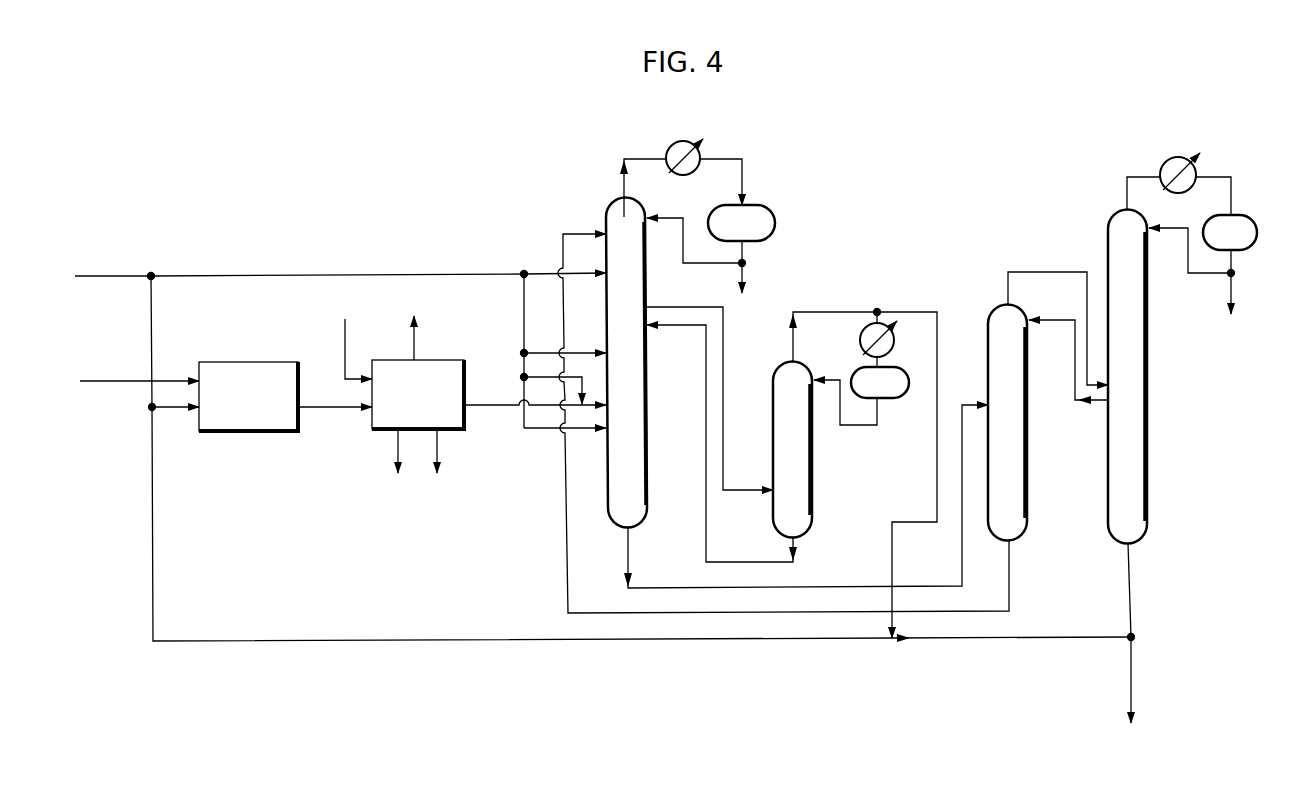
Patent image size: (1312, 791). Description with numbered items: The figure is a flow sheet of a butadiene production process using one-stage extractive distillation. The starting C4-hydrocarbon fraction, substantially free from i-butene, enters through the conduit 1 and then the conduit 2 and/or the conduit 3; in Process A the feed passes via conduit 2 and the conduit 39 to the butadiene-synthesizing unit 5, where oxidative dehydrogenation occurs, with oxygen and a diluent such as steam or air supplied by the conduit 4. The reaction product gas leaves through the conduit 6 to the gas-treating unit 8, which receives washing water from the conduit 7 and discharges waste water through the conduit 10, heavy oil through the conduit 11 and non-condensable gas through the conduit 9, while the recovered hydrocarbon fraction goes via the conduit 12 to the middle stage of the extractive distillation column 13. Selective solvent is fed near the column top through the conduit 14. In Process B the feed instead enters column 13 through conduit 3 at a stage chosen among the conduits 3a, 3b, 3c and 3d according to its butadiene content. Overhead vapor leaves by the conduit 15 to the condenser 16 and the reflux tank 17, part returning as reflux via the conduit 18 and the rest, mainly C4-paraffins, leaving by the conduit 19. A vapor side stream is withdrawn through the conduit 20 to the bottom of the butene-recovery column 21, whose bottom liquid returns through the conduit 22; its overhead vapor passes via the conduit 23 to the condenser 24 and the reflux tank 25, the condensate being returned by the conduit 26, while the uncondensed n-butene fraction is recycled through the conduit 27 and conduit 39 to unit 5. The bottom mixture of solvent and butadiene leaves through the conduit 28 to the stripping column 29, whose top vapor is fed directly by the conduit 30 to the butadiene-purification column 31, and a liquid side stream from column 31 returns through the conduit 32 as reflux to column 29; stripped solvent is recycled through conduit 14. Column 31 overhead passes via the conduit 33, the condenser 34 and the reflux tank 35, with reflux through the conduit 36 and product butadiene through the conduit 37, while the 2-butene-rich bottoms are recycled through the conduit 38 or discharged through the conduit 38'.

The conduit 1 is at (109, 274).
The conduit 2 is at (154, 323).
The conduit 3 is at (257, 272).
The conduit 3a is at (577, 272).
The conduit 3b is at (578, 351).
The conduit 3c is at (548, 376).
The conduit 3d is at (580, 432).
The conduit 4 is at (113, 380).
The butadiene-synthesizing unit 5 is at (262, 362).
The conduit 6 is at (334, 405).
The conduit 7 is at (350, 372).
The gas-treating unit 8 is at (466, 372).
The conduit 9 is at (418, 342).
The conduit 10 is at (396, 452).
The conduit 11 is at (440, 460).
The conduit 12 is at (492, 408).
The extractive distillation column 13 is at (648, 411).
The conduit 14 is at (579, 234).
The conduit 15 is at (623, 181).
The condenser 16 is at (668, 150).
The reflux tank 17 is at (778, 222).
The conduit 18 is at (712, 264).
The conduit 19 is at (748, 271).
The conduit 20 is at (723, 452).
The butene-recovery column 21 is at (814, 500).
The conduit 22 is at (740, 560).
The conduit 23 is at (790, 344).
The condenser 24 is at (860, 346).
The reflux tank 25 is at (895, 399).
The conduit 26 is at (858, 427).
The conduit 27 is at (937, 501).
The conduit 28 is at (667, 586).
The stripping column 29 is at (1030, 452).
The conduit 30 is at (1023, 271).
The butadiene-purification column 31 is at (1149, 365).
The conduit 32 is at (1059, 318).
The conduit 33 is at (1121, 197).
The condenser 34 is at (1159, 165).
The reflux tank 35 is at (1258, 225).
The conduit 36 is at (1200, 275).
The conduit 37 is at (1236, 288).
The conduit 38 is at (1111, 592).
The conduit 38' is at (1173, 680).
The conduit 39 is at (497, 640).